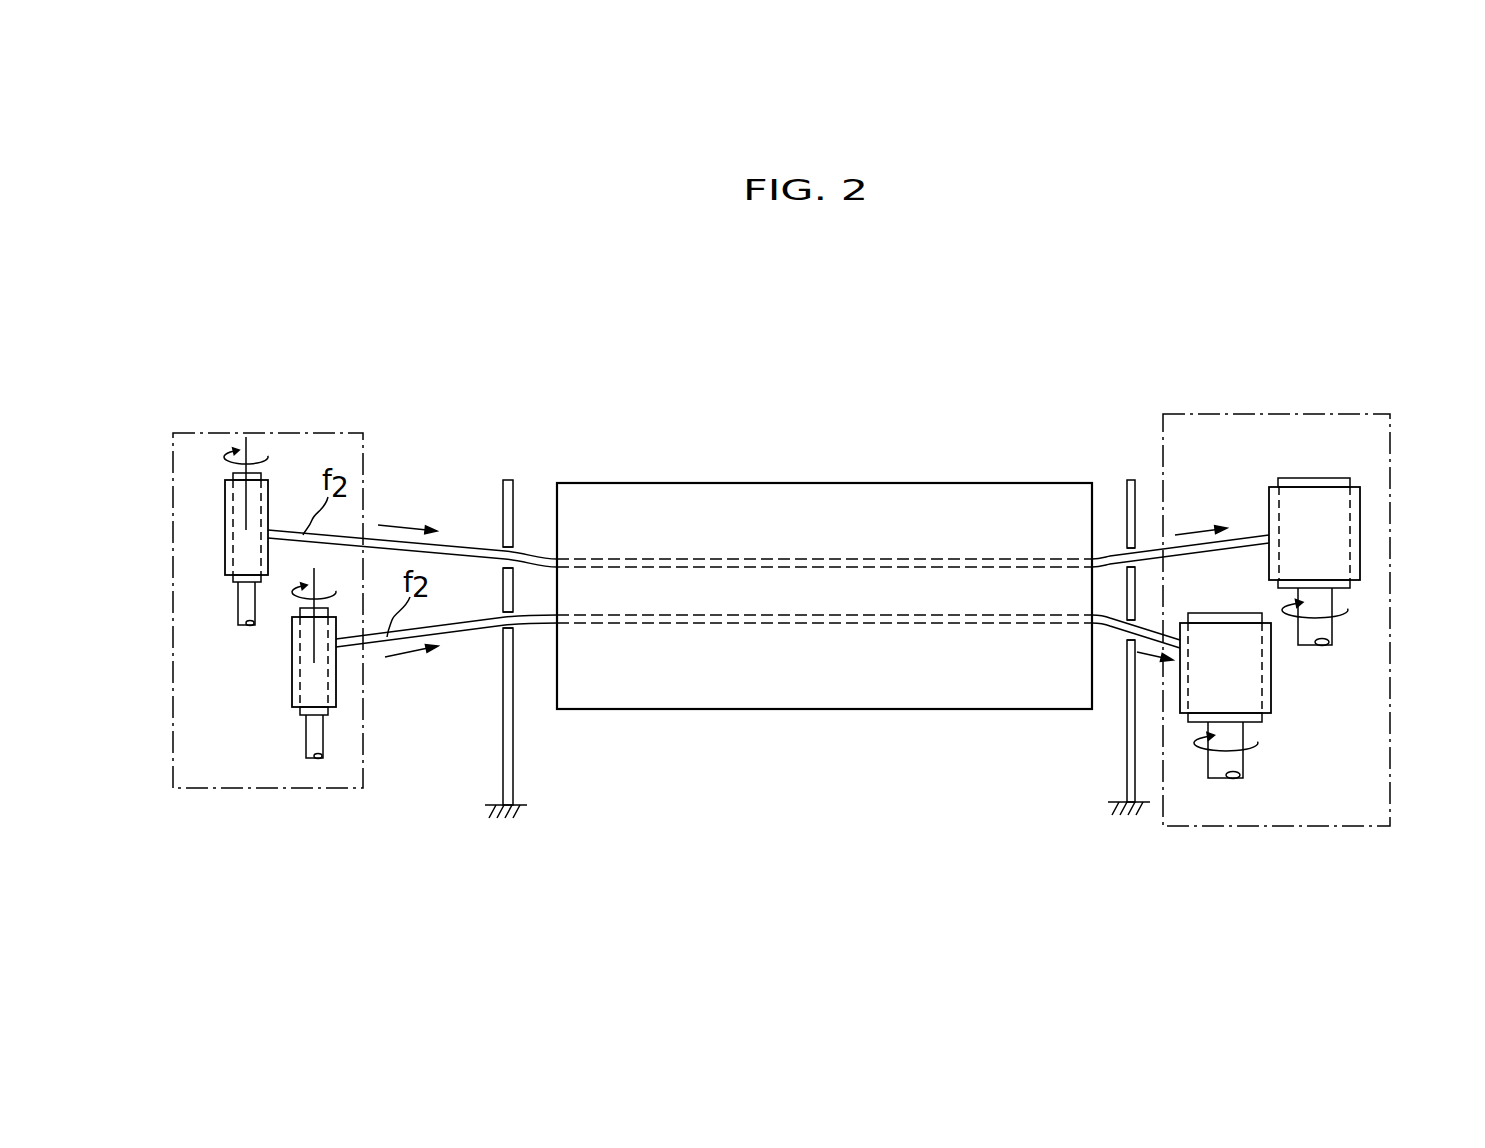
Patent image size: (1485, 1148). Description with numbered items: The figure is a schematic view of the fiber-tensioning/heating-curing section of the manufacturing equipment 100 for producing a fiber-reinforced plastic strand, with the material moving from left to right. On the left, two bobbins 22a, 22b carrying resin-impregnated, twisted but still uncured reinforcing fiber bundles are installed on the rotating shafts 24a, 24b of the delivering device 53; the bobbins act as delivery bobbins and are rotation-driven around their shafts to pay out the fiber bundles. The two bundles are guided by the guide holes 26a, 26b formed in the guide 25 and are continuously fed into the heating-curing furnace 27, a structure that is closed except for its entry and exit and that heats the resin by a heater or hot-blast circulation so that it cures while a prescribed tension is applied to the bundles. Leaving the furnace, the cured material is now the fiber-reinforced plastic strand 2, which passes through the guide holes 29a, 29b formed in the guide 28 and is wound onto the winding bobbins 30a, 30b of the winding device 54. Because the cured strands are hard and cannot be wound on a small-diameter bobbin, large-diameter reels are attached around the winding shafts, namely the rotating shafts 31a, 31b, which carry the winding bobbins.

The manufacturing equipment 100 is at (863, 340).
The fiber-reinforced plastic strand 2 is at (1236, 540).
The delivering device 53 is at (305, 433).
The winding device 54 is at (1306, 414).
The bobbin 22a is at (232, 512).
The bobbin 22b is at (296, 676).
The rotating shaft 24a is at (247, 597).
The rotating shaft 24b is at (310, 737).
The guide 25 is at (507, 480).
The guide hole 26a is at (506, 548).
The guide hole 26b is at (506, 630).
The heating-curing furnace 27 is at (772, 482).
The guide 28 is at (1130, 482).
The guide hole 29a is at (1138, 550).
The guide hole 29b is at (1137, 624).
The winding bobbin 30a is at (1355, 542).
The winding bobbin 30b is at (1265, 690).
The rotating shaft 31a is at (1325, 632).
The rotating shaft 31b is at (1232, 765).